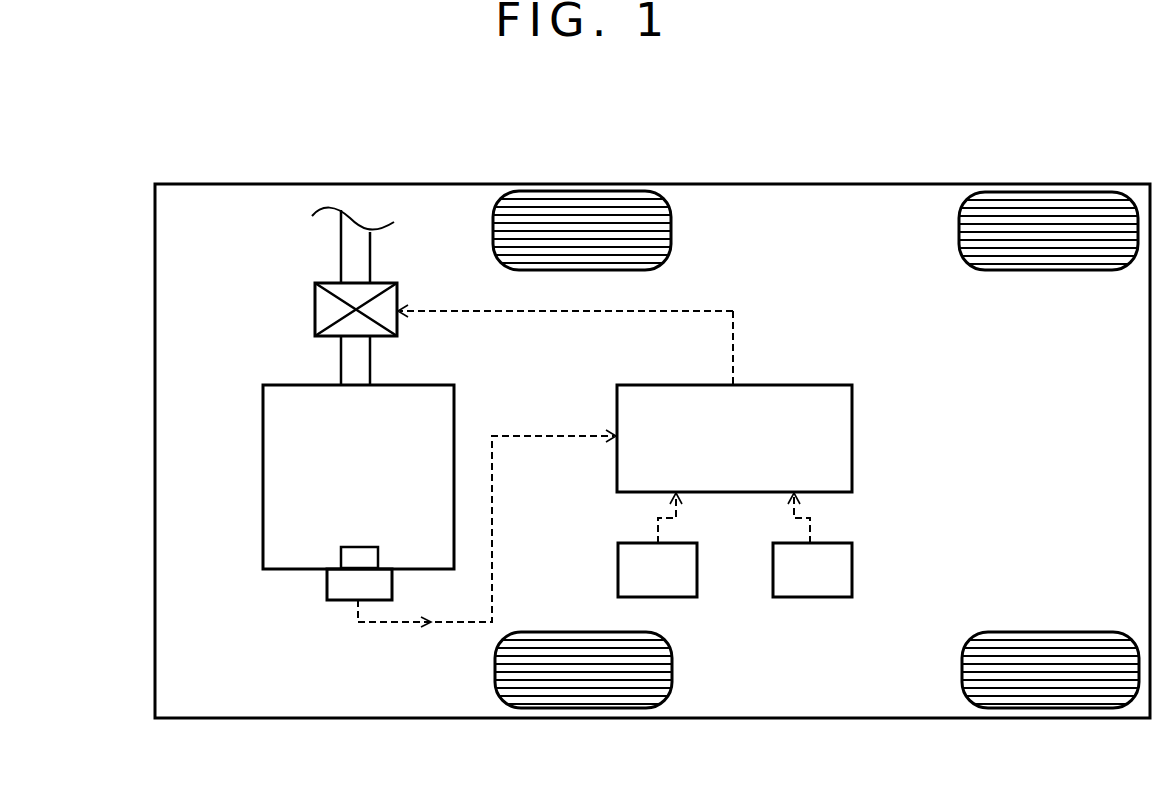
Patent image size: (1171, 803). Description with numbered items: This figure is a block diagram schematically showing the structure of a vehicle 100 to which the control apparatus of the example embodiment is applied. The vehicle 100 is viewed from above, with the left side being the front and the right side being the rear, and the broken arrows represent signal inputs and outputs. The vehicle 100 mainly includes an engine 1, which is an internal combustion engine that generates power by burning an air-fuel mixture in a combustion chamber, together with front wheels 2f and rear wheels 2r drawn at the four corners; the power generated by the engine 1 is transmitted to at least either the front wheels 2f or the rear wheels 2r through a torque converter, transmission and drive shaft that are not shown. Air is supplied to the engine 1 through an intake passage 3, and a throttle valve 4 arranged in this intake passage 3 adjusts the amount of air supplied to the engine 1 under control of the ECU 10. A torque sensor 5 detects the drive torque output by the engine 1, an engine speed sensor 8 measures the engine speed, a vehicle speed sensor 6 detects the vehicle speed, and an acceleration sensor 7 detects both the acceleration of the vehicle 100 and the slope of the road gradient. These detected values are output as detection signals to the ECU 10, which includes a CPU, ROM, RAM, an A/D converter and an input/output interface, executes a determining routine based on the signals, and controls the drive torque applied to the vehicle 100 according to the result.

The vehicle 100 is at (722, 184).
The engine 1 is at (263, 468).
The front wheels 2f is at (671, 232).
The rear wheels 2r is at (959, 230).
The intake passage 3 is at (341, 262).
The throttle valve 4 is at (315, 310).
The torque sensor 5 is at (327, 590).
The vehicle speed sensor 6 is at (618, 564).
The acceleration sensor 7 is at (852, 572).
The engine speed sensor 8 is at (341, 564).
The ECU 10 is at (852, 441).